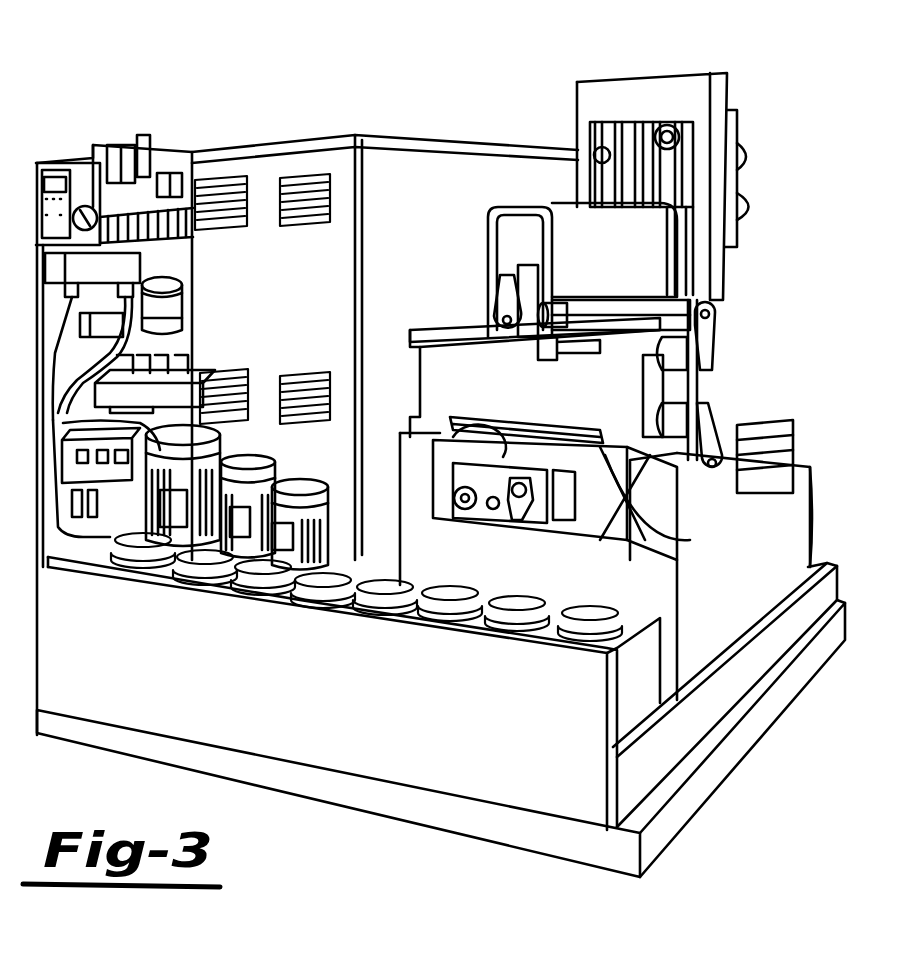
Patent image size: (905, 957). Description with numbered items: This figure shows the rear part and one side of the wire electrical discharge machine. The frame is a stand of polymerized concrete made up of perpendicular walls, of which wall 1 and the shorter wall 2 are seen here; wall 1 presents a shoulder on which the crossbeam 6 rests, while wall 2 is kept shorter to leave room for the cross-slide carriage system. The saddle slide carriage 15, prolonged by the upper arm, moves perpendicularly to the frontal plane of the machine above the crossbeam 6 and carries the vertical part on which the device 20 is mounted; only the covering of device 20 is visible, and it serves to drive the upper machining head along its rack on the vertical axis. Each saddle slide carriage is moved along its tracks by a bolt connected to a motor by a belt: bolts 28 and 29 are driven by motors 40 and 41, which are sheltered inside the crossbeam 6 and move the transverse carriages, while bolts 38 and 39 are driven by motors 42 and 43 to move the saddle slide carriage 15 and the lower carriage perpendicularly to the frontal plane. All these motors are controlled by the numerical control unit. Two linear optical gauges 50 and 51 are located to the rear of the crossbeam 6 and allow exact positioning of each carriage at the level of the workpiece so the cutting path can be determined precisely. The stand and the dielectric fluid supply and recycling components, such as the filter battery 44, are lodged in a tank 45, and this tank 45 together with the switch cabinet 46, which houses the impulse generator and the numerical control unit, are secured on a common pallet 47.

The wall 1 is at (767, 543).
The wall 2 is at (545, 580).
The crossbeam 6 is at (509, 400).
The saddle slide carriage 15 is at (627, 240).
The device 20 is at (657, 128).
The bolt 28 is at (720, 307).
The bolt 29 is at (793, 430).
The bolt 38 is at (593, 317).
The bolt 39 is at (668, 507).
The motor 40 is at (712, 357).
The motor 41 is at (720, 407).
The motor 42 is at (497, 327).
The motor 43 is at (720, 522).
The filter battery 44 is at (613, 653).
The tank 45 is at (790, 623).
The switch cabinet 46 is at (405, 172).
The pallet 47 is at (745, 732).
The linear optical gauge 50 is at (500, 350).
The linear optical gauge 51 is at (620, 410).